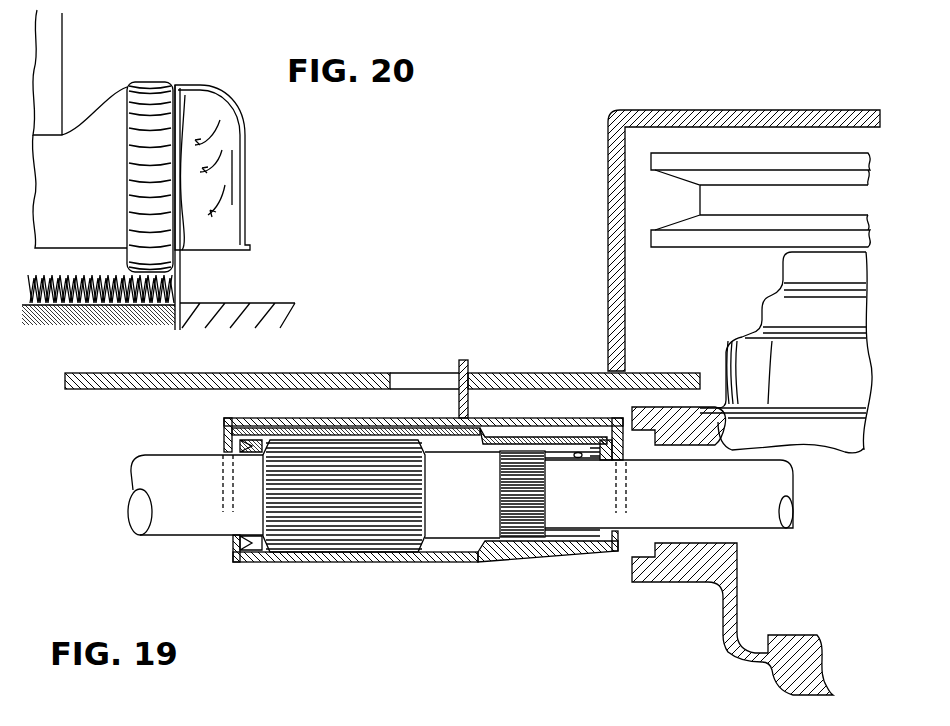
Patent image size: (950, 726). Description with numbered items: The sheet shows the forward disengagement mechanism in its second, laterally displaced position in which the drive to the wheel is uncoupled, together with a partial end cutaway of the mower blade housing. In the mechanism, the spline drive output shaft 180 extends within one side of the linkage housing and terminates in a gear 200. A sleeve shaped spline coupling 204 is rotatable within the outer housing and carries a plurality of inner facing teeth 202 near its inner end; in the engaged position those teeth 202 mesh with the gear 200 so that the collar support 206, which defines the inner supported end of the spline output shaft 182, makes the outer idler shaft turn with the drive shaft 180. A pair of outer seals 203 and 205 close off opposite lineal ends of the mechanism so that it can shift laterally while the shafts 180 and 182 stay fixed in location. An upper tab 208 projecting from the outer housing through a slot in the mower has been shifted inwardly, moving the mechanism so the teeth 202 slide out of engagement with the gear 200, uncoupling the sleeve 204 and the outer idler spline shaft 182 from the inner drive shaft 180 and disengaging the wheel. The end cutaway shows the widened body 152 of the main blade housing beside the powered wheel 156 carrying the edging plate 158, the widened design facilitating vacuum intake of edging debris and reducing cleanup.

In FIG. 20, the widened body 152 is at (245, 170).
In FIG. 20, the powered wheel 156 is at (147, 90).
In FIG. 20, the edging plate 158 is at (185, 265).
In FIG. 19, the spline drive output shaft 180 is at (636, 522).
In FIG. 19, the spline output shaft 182 is at (205, 520).
In FIG. 19, the gear 200 is at (497, 475).
In FIG. 19, the teeth 202 is at (568, 531).
In FIG. 19, the outer seal 203 is at (228, 446).
In FIG. 19, the sleeve shaped spline coupling 204 is at (428, 558).
In FIG. 19, the outer seal 205 is at (606, 440).
In FIG. 19, the collar support 206 is at (328, 528).
In FIG. 19, the upper tab 208 is at (460, 360).